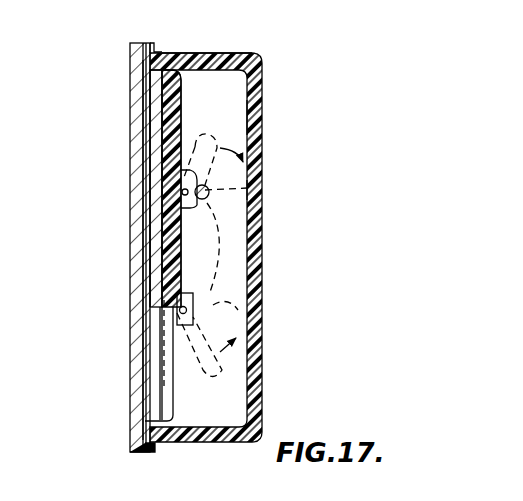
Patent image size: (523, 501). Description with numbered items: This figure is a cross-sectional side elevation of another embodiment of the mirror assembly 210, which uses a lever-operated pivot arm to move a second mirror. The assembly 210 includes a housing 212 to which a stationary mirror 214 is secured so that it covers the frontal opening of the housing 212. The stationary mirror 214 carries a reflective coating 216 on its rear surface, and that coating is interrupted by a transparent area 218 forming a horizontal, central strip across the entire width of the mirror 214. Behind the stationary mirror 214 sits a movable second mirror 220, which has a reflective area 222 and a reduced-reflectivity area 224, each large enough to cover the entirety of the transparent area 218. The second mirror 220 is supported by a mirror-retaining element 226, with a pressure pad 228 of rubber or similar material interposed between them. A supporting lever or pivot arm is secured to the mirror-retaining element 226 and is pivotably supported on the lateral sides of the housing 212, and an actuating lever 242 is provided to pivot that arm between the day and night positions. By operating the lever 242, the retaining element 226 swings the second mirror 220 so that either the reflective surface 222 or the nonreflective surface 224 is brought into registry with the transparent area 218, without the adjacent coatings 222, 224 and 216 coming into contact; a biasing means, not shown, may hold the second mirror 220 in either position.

The mirror assembly 210 is at (268, 44).
The housing 212 is at (250, 165).
The stationary mirror 214 is at (133, 165).
The reflective coating 216 is at (150, 353).
The transparent area 218 is at (182, 307).
The movable second mirror 220 is at (253, 114).
The reflective area 222 is at (148, 259).
The reduced-reflectivity area 224 is at (131, 194).
The mirror-retaining element 226 is at (245, 76).
The pressure pad 228 is at (168, 54).
The actuating lever 242 is at (248, 190).